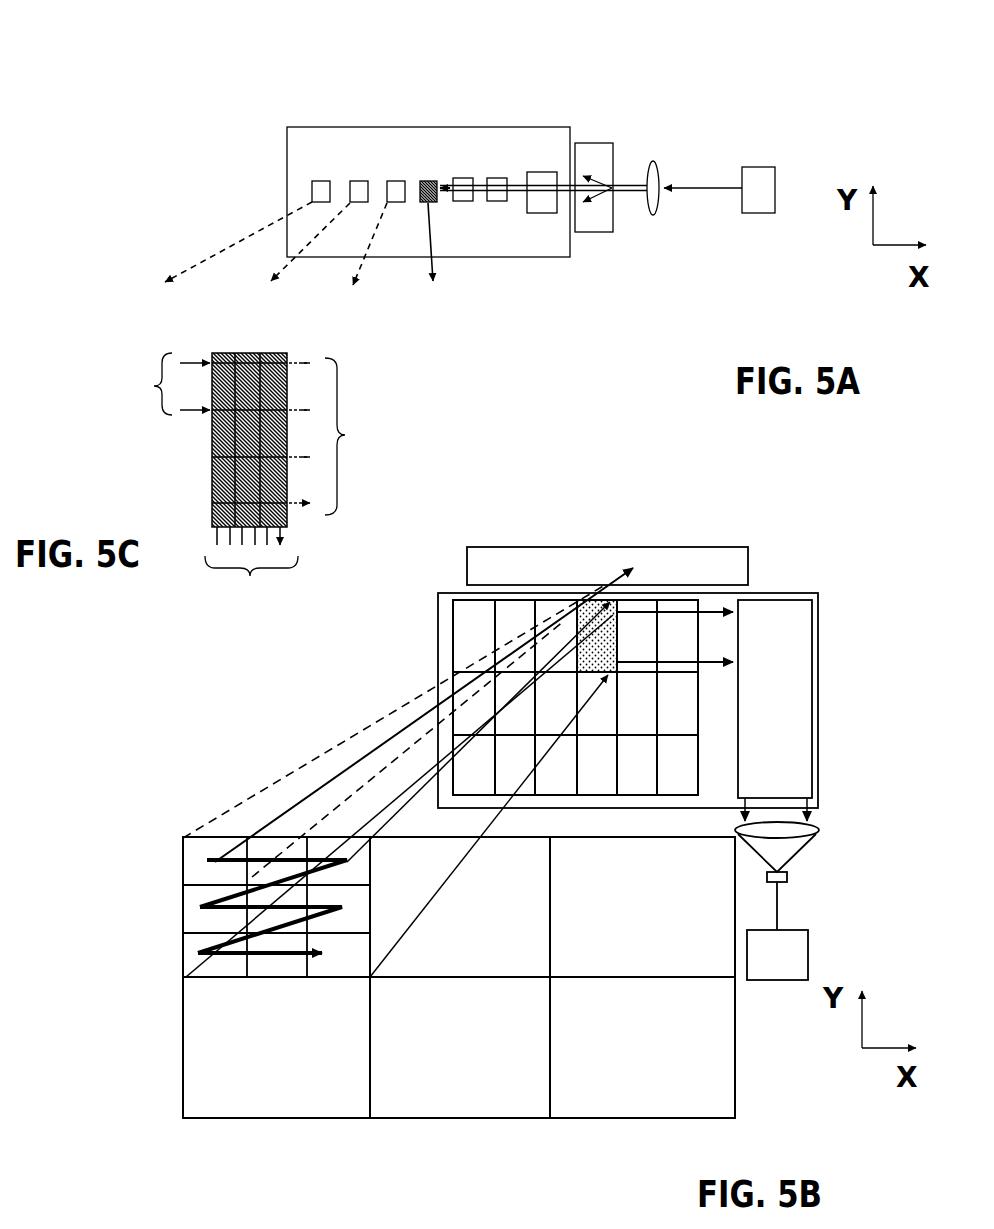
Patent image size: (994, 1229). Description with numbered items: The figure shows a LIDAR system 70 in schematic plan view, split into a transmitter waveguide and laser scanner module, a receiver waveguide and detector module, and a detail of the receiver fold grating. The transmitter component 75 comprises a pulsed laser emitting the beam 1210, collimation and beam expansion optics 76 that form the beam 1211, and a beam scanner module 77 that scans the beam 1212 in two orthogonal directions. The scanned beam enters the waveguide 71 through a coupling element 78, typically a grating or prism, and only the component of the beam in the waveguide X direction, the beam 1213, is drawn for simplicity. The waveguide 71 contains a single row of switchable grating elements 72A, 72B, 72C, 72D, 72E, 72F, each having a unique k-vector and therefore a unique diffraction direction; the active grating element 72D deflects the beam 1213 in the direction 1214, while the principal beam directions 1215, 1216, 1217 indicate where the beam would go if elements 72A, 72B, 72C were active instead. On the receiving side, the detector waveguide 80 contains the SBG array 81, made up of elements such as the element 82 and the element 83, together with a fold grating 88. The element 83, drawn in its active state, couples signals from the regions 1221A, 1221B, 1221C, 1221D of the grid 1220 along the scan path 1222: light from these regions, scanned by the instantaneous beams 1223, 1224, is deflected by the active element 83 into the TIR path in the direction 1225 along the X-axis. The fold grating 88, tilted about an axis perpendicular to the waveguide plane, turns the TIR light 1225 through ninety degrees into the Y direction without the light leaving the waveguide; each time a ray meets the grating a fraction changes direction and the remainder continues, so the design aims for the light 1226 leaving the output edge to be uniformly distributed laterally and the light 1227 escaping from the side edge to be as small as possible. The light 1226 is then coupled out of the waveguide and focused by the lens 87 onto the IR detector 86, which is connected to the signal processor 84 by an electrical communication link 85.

In FIG. 5A, the LIDAR system 70 is at (762, 103).
In FIG. 5B, the LIDAR system 70 is at (520, 547).
In FIG. 5A, the waveguide 71 is at (287, 162).
In FIG. 5A, the switchable grating element 72A is at (315, 178).
In FIG. 5A, the switchable grating element 72B is at (365, 178).
In FIG. 5A, the switchable grating element 72C is at (397, 178).
In FIG. 5A, the active grating element 72D is at (423, 193).
In FIG. 5A, the switchable grating element 72E is at (468, 178).
In FIG. 5A, the switchable grating element 72F is at (503, 178).
In FIG. 5A, the transmitter component 75 is at (777, 198).
In FIG. 5A, the collimation and beam expansion optics 76 is at (653, 160).
In FIG. 5A, the beam scanner module 77 is at (593, 142).
In FIG. 5A, the coupling element 78 is at (552, 212).
In FIG. 5B, the detector waveguide 80 is at (813, 593).
In FIG. 5B, the SBG array 81 is at (438, 592).
In FIG. 5B, the SBG array element 82 is at (470, 623).
In FIG. 5B, the active SBG element 83 is at (615, 603).
In FIG. 5B, the signal processor 84 is at (808, 965).
In FIG. 5B, the electrical communication link 85 is at (782, 925).
In FIG. 5B, the IR detector 86 is at (792, 870).
In FIG. 5B, the lens 87 is at (818, 827).
In FIG. 5C, the fold grating 88 is at (208, 467).
In FIG. 5B, the fold grating 88 is at (812, 708).
In FIG. 5A, the laser beam 1210 is at (697, 192).
In FIG. 5A, the collimated beam 1211 is at (647, 200).
In FIG. 5A, the scanned beam 1212 is at (612, 230).
In FIG. 5A, the in-waveguide beam component 1213 is at (500, 213).
In FIG. 5A, the deflected beam direction 1214 is at (432, 262).
In FIG. 5A, the principal beam direction 1215 is at (290, 263).
In FIG. 5A, the principal beam direction 1216 is at (227, 242).
In FIG. 5A, the principal beam direction 1217 is at (363, 260).
In FIG. 5B, the grid 1220 is at (155, 997).
In FIG. 5B, the scanned region 1221A is at (195, 860).
In FIG. 5B, the scanned region 1221B is at (247, 803).
In FIG. 5B, the scanned region 1221C is at (353, 857).
In FIG. 5B, the scanned region 1221D is at (337, 952).
In FIG. 5B, the scan path 1222 is at (200, 907).
In FIG. 5B, the instantaneous beam 1223 is at (340, 752).
In FIG. 5B, the instantaneous beam 1224 is at (420, 745).
In FIG. 5C, the TIR light 1225 is at (145, 384).
In FIG. 5B, the TIR light 1225 is at (703, 597).
In FIG. 5C, the output light 1226 is at (251, 571).
In FIG. 5B, the output light 1226 is at (753, 803).
In FIG. 5C, the side-edge light 1227 is at (353, 436).